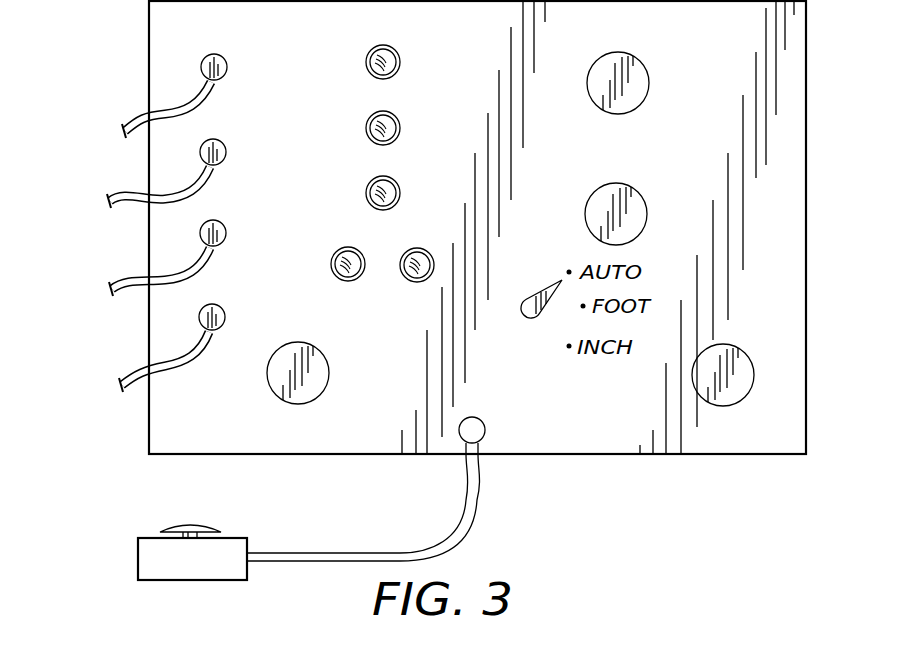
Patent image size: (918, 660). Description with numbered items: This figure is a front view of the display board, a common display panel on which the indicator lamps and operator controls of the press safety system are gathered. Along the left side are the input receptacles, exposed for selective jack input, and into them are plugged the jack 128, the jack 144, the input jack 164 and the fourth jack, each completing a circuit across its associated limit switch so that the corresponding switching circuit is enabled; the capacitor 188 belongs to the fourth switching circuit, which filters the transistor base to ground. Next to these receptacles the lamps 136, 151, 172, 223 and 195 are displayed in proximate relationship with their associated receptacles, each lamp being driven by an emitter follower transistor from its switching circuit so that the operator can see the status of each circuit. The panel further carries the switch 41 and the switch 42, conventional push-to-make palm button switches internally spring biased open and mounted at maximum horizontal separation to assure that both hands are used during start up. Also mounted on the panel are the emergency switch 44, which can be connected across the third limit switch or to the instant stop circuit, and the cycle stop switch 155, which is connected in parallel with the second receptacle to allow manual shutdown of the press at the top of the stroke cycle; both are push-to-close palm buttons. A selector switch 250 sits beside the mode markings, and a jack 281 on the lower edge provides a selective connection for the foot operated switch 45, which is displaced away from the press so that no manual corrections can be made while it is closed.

The jack 128 is at (225, 58).
The jack 144 is at (226, 146).
The input jack 164 is at (226, 228).
The capacitor 188 is at (240, 298).
The lamp 136 is at (399, 54).
The lamp 151 is at (400, 122).
The lamp 172 is at (400, 187).
The lamp 223 is at (346, 249).
The lamp 195 is at (418, 249).
The switch 41 is at (321, 364).
The emergency switch 44 is at (640, 66).
The cycle stop switch 155 is at (645, 200).
The switch 42 is at (740, 352).
The selector switch 250 is at (530, 294).
The jack 281 is at (485, 431).
The foot operated switch 45 is at (233, 548).